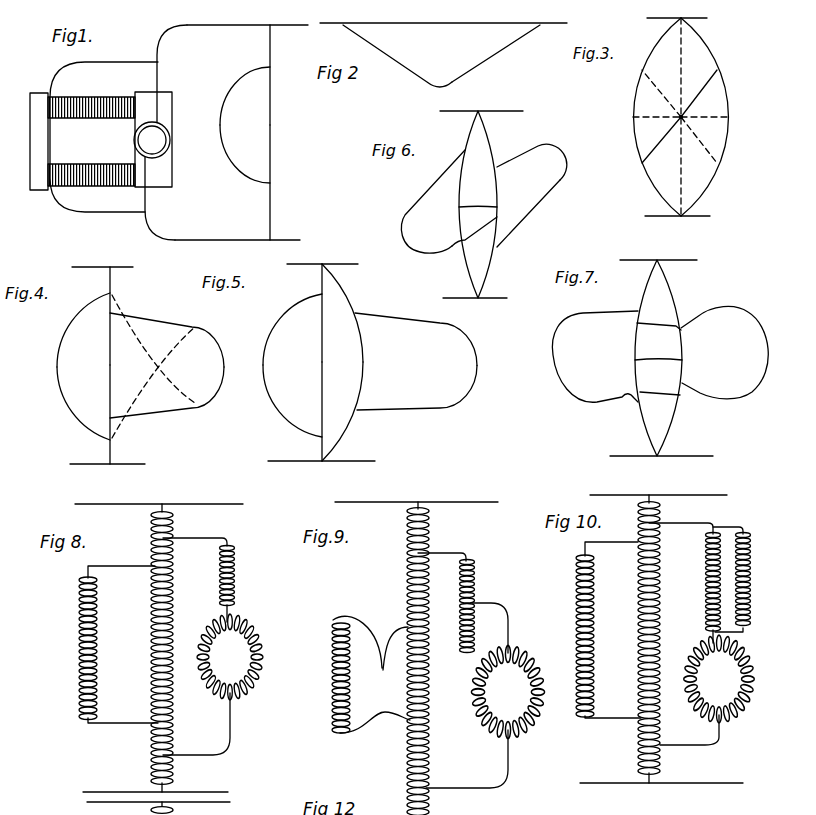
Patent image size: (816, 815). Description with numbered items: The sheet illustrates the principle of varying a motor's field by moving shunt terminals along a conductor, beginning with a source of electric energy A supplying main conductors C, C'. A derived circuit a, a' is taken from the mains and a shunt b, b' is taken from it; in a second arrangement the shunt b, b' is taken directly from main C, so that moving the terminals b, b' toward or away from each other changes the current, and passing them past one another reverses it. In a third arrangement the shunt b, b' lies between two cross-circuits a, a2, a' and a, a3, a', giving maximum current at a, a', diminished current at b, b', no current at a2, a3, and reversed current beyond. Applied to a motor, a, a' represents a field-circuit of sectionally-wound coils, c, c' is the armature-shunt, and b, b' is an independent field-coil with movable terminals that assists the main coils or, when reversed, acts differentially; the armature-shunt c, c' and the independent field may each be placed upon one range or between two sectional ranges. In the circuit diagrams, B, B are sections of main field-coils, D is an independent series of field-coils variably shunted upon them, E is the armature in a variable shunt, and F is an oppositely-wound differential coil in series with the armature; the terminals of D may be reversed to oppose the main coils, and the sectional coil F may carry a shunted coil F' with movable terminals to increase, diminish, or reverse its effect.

In FIG. 1, the source of electric energy A is at (26, 141).
In FIG. 1, the main conductor C is at (247, 16).
In FIG. 2, the main conductor C is at (443, 11).
In FIG. 3, the main conductor C is at (684, 9).
In FIG. 4, the main conductor C is at (112, 259).
In FIG. 5, the main conductor C is at (334, 259).
In FIG. 6, the main conductor C is at (494, 102).
In FIG. 7, the main conductor C is at (668, 254).
In FIG. 8, the main conductor C is at (169, 652).
In FIG. 9, the main conductor C is at (416, 486).
In FIG. 10, the main conductor C is at (652, 484).
In FIG. 1, the main conductor C' is at (248, 239).
In FIG. 3, the main conductor C' is at (691, 213).
In FIG. 4, the main conductor C' is at (116, 476).
In FIG. 5, the main conductor C' is at (325, 473).
In FIG. 6, the main conductor C' is at (488, 299).
In FIG. 7, the main conductor C' is at (674, 453).
In FIG. 8, the main conductor C' is at (166, 778).
In FIG. 10, the main conductor C' is at (661, 797).
In FIG. 1, the derived-circuit terminal a is at (262, 75).
In FIG. 3, the derived-circuit terminal a is at (702, 109).
In FIG. 4, the derived-circuit terminal a is at (107, 308).
In FIG. 5, the derived-circuit terminal a is at (339, 305).
In FIG. 6, the derived-circuit terminal a is at (478, 207).
In FIG. 7, the derived-circuit terminal a is at (658, 300).
In FIG. 1, the derived-circuit terminal a' is at (260, 182).
In FIG. 3, the derived-circuit terminal a' is at (660, 126).
In FIG. 4, the derived-circuit terminal a' is at (109, 423).
In FIG. 5, the derived-circuit terminal a' is at (337, 421).
In FIG. 6, the derived-circuit terminal a' is at (478, 252).
In FIG. 7, the derived-circuit terminal a' is at (658, 417).
In FIG. 3, the cross-circuit point a2 is at (714, 118).
In FIG. 3, the cross-circuit point a3 is at (643, 118).
In FIG. 1, the shunt terminal b is at (251, 91).
In FIG. 2, the shunt terminal b is at (393, 56).
In FIG. 3, the shunt terminal b is at (707, 109).
In FIG. 4, the shunt terminal b is at (159, 334).
In FIG. 5, the shunt terminal b is at (407, 339).
In FIG. 6, the shunt terminal b is at (532, 162).
In FIG. 7, the shunt terminal b is at (650, 332).
In FIG. 1, the shunt terminal b' is at (254, 154).
In FIG. 2, the shunt terminal b' is at (501, 53).
In FIG. 3, the shunt terminal b' is at (651, 127).
In FIG. 4, the shunt terminal b' is at (159, 400).
In FIG. 5, the shunt terminal b' is at (406, 390).
In FIG. 6, the shunt terminal b' is at (528, 224).
In FIG. 7, the shunt terminal b' is at (660, 382).
In FIG. 4, the armature-shunt terminal c is at (126, 341).
In FIG. 5, the armature-shunt terminal c is at (292, 329).
In FIG. 6, the armature-shunt terminal c is at (439, 199).
In FIG. 7, the armature-shunt terminal c is at (601, 353).
In FIG. 4, the armature-shunt terminal c' is at (126, 392).
In FIG. 5, the armature-shunt terminal c' is at (292, 401).
In FIG. 6, the armature-shunt terminal c' is at (474, 226).
In FIG. 7, the armature-shunt terminal c' is at (724, 359).
In FIG. 8, the main field-coil section B is at (168, 658).
In FIG. 9, the main field-coil section B is at (427, 658).
In FIG. 10, the main field-coil section B is at (656, 639).
In FIG. 8, the independent series of field-coils D is at (106, 644).
In FIG. 9, the independent series of field-coils D is at (358, 674).
In FIG. 10, the independent series of field-coils D is at (608, 630).
In FIG. 8, the armature E is at (217, 684).
In FIG. 9, the armature E is at (485, 716).
In FIG. 10, the armature E is at (708, 690).
In FIG. 9, the differential field-coil F is at (490, 628).
In FIG. 10, the differential field-coil F is at (685, 583).
In FIG. 8, the shunted coil F' is at (209, 580).
In FIG. 9, the shunted coil F' is at (454, 603).
In FIG. 10, the shunted coil F' is at (740, 579).